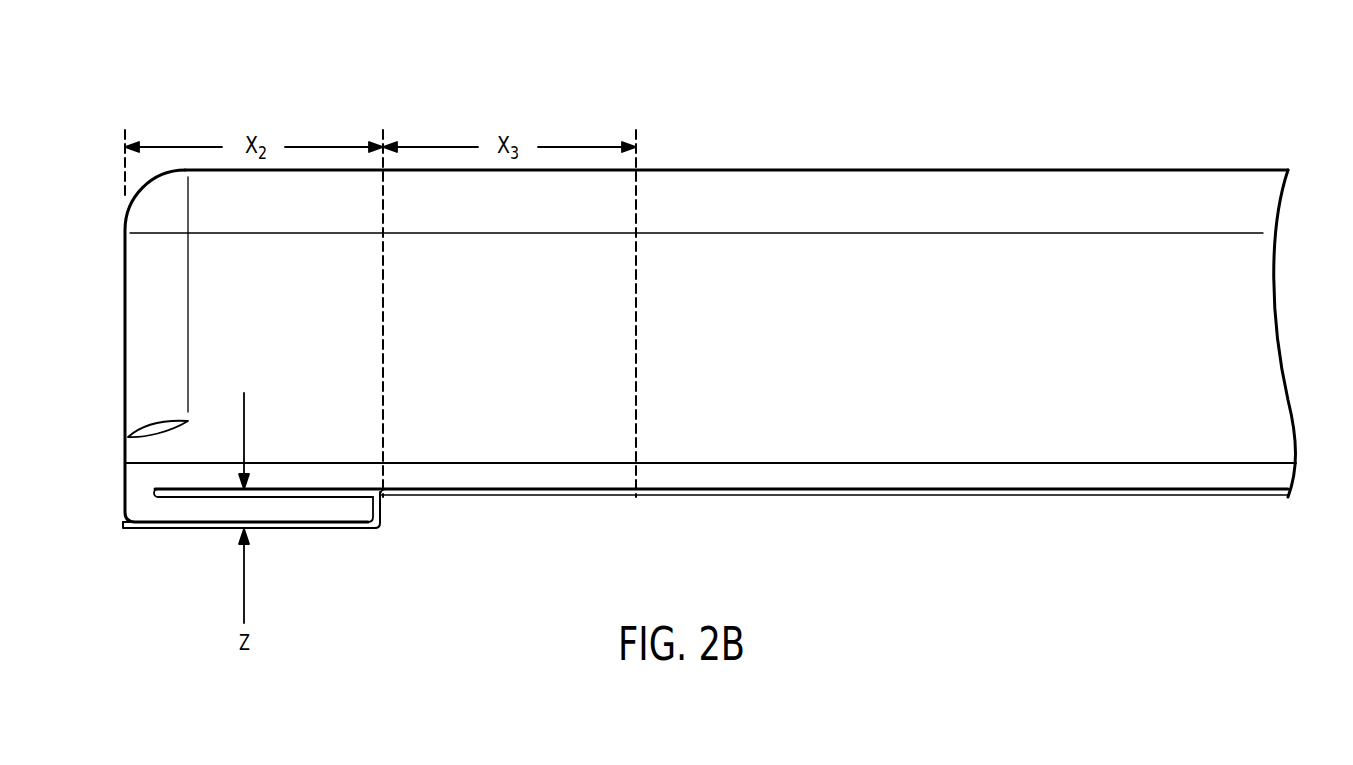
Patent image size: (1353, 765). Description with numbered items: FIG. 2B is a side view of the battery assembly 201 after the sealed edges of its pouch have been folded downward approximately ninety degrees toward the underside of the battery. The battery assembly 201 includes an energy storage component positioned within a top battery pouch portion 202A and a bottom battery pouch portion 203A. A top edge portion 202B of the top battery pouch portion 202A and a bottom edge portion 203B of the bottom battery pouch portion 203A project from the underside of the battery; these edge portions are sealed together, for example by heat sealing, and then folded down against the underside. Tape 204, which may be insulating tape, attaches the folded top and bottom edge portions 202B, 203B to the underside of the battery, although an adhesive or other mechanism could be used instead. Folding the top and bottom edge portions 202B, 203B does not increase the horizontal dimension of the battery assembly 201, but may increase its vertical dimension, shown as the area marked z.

The battery assembly 201 is at (690, 120).
The top battery pouch portion 202A is at (890, 170).
The top edge portion 202B is at (210, 526).
The bottom battery pouch portion 203A is at (920, 480).
The bottom edge portion 203B is at (313, 503).
The tape 204 is at (458, 497).